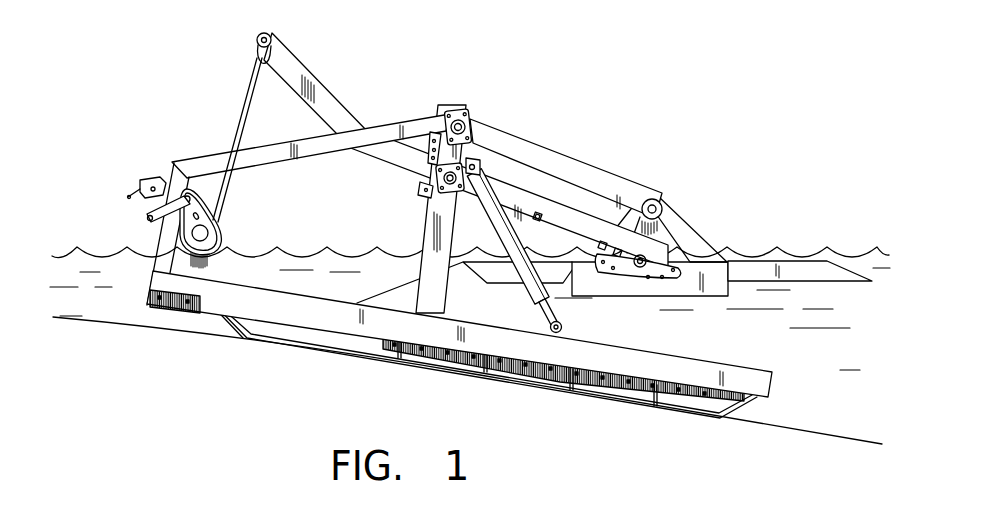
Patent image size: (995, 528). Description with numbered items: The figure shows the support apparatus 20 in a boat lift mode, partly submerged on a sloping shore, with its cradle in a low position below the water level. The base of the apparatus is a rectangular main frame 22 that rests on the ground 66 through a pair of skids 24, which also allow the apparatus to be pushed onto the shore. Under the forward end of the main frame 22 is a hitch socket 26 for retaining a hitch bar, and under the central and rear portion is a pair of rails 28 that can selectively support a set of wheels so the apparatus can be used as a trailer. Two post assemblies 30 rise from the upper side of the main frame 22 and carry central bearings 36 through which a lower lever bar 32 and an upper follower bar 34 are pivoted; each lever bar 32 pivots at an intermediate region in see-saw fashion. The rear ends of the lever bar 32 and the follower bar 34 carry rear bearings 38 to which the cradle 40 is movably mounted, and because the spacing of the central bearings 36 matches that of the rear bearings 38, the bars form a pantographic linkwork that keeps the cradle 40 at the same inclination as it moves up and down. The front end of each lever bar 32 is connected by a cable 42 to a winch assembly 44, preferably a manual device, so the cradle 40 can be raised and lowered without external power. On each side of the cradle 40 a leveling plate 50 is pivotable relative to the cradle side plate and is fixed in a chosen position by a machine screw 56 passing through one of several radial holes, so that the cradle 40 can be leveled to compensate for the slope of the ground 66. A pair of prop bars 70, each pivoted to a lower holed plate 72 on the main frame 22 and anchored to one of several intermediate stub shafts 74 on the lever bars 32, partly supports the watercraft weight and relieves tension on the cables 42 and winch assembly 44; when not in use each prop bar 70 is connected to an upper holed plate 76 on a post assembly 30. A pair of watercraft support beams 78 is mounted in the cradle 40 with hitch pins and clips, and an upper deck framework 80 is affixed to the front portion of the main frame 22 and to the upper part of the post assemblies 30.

The support apparatus 20 is at (716, 75).
The main frame 22 is at (697, 385).
The skids 24 is at (257, 342).
The hitch socket 26 is at (173, 313).
The rails 28 is at (380, 338).
The post assemblies 30 is at (420, 232).
The lever bar 32 is at (297, 63).
The follower bar 34 is at (530, 143).
The central bearings 36 is at (448, 115).
The rear bearings 38 is at (634, 250).
The cradle 40 is at (678, 238).
The cable 42 is at (245, 110).
The winch assembly 44 is at (98, 210).
The leveling plate 50 is at (665, 248).
The machine screw 56 is at (653, 280).
The ground 66 is at (795, 435).
The prop bars 70 is at (540, 307).
The lower holed plate 72 is at (563, 335).
The intermediate stub shafts 74 is at (545, 220).
The upper holed plate 76 is at (472, 166).
The watercraft support beams 78 is at (826, 253).
The upper deck framework 80 is at (205, 155).